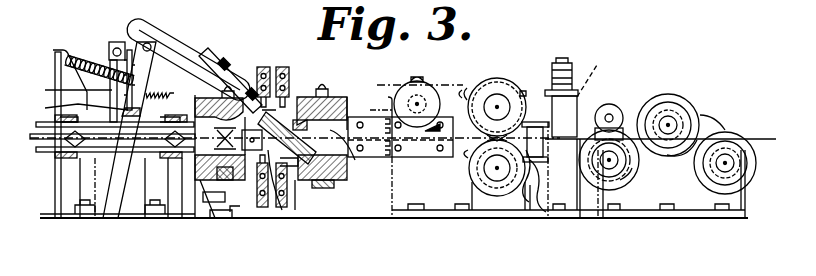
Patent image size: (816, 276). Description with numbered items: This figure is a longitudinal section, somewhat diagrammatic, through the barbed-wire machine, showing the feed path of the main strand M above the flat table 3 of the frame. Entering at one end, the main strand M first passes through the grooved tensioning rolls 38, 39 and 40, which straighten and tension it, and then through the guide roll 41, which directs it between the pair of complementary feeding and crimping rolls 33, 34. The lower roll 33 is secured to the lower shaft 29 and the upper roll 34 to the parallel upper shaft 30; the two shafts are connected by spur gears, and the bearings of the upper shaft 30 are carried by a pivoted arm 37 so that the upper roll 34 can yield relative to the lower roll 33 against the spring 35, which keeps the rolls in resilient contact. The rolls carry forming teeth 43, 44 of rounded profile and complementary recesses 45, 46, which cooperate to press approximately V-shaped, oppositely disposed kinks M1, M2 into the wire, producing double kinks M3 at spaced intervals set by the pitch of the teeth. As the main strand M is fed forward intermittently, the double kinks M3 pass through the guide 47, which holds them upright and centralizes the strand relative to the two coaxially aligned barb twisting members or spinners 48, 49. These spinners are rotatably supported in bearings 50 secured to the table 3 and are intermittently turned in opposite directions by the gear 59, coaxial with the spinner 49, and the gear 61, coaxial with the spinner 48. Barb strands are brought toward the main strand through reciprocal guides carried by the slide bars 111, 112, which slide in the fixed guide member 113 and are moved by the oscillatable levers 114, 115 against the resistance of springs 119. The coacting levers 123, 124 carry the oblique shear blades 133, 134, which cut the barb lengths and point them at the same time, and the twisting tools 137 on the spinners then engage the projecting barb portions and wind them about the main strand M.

The table 3 is at (397, 208).
The lower shaft 29 is at (497, 170).
The upper shaft 30 is at (508, 92).
The feeding and crimping roll 33 is at (468, 158).
The feeding and crimping roll 34 is at (497, 108).
The spring 35 is at (578, 100).
The pivoted arm 37 is at (579, 93).
The grooved tensioning roll 38 is at (737, 139).
The grooved tensioning roll 39 is at (677, 106).
The grooved tensioning roll 40 is at (634, 178).
The guide roll 41 is at (546, 162).
The forming tooth 43 is at (466, 91).
The forming tooth 44 is at (527, 203).
The complementary recess 45 is at (546, 212).
The complementary recess 46 is at (457, 97).
The guide 47 is at (415, 149).
The barb twisting member or spinner 48 is at (348, 97).
The barb twisting member or spinner 49 is at (198, 149).
The bearing 50 is at (207, 187).
The gear 59 is at (214, 198).
The gear 61 is at (396, 155).
The slide bar 111 is at (168, 58).
The slide bar 112 is at (145, 38).
The fixed guide member 113 is at (226, 52).
The oscillatable lever 114 is at (70, 108).
The oscillatable lever 115 is at (62, 90).
The spring 119 is at (90, 60).
The coacting lever 123 is at (297, 97).
The coacting lever 124 is at (290, 174).
The shear blade 133 is at (272, 67).
The shear blade 134 is at (275, 219).
The twisting tool 137 is at (259, 208).
The main strand M is at (663, 168).
The kink M1 is at (373, 194).
The kink M2 is at (372, 172).
The double kink M3 is at (378, 88).